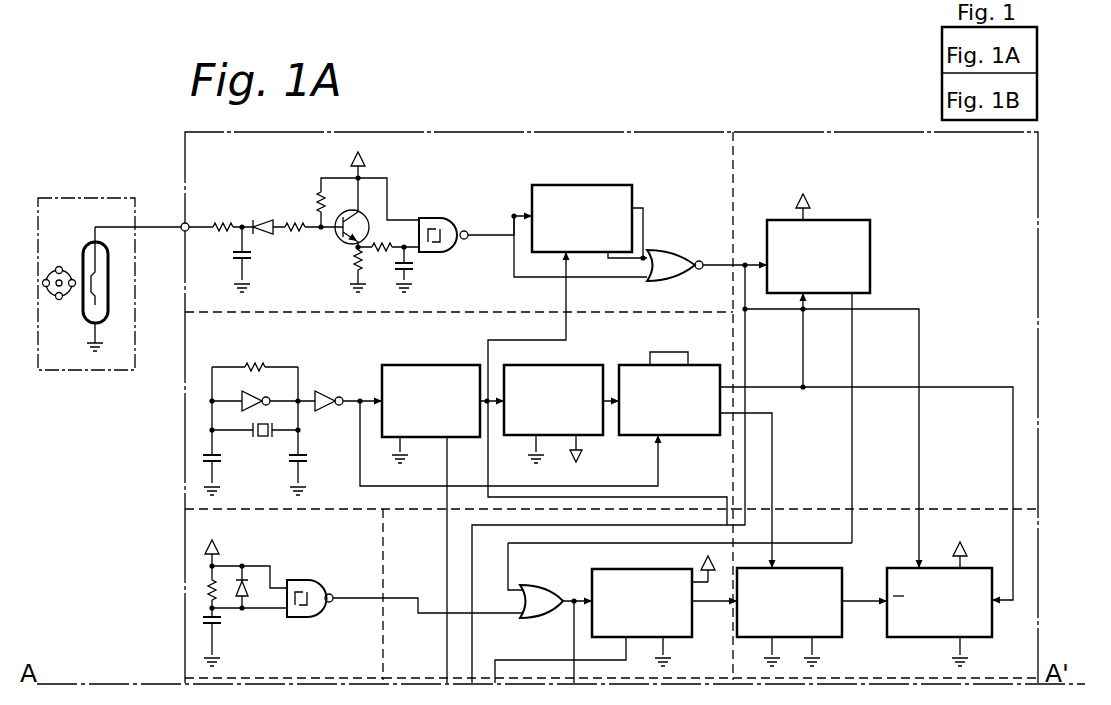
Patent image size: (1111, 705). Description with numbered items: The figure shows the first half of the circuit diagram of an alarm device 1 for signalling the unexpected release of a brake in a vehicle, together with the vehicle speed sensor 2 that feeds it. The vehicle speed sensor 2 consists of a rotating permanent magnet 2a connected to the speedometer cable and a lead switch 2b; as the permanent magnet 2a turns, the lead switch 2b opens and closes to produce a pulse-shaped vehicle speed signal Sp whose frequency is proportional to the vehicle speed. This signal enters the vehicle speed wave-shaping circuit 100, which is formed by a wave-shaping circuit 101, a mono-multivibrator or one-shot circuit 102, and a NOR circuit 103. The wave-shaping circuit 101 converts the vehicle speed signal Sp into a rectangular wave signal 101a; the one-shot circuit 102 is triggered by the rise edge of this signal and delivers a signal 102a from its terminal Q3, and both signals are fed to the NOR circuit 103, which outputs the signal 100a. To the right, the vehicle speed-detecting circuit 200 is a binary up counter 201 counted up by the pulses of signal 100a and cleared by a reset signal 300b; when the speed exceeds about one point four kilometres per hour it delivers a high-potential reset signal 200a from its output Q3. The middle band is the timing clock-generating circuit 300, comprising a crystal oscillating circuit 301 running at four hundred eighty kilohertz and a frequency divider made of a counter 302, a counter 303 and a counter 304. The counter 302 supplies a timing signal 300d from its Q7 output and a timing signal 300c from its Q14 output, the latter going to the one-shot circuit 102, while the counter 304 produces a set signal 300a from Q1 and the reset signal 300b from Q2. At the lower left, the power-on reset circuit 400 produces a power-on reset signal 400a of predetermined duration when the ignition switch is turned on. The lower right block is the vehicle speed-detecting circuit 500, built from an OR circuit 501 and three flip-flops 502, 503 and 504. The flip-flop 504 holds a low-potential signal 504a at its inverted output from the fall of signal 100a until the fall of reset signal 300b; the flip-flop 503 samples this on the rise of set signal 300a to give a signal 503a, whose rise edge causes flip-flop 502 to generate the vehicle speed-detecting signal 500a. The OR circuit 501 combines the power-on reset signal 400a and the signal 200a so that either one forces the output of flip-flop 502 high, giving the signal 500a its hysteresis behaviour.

The alarm device 1 is at (680, 129).
The vehicle speed sensor 2 is at (108, 373).
The rotating permanent magnet 2a is at (55, 296).
The lead switch 2b is at (108, 316).
The vehicle speed signal Sp is at (162, 231).
The vehicle speed wave-shaping circuit 100 is at (547, 132).
The signal 100a is at (704, 258).
The wave-shaping circuit 101 is at (397, 190).
The rectangular wave signal 101a is at (483, 233).
The mono-multivibrator (one-shot circuit) 102 is at (612, 184).
The signal 102a is at (580, 262).
The NOR circuit 103 is at (690, 279).
The vehicle speed-detecting circuit 200 is at (790, 131).
The reset signal 200a is at (856, 463).
The binary up counter 201 is at (870, 230).
The timing clock-generating circuit 300 is at (185, 458).
The set signal 300a is at (726, 420).
The reset signal 300b is at (733, 348).
The timing signal 300c is at (566, 338).
The timing signal 300d is at (445, 495).
The crystal oscillating circuit 301 is at (306, 366).
The counter 302 is at (420, 365).
The counter 303 is at (598, 437).
The counter 304 is at (640, 437).
The power-on reset circuit 400 is at (185, 589).
The power-on reset signal 400a is at (352, 602).
The vehicle speed-detecting circuit 500 is at (1033, 593).
The vehicle speed-detecting signal 500a is at (508, 661).
The OR circuit 501 is at (546, 586).
The flip-flop 502 is at (613, 557).
The flip-flop 503 is at (847, 574).
The signal 503a is at (712, 601).
The flip-flop 504 is at (901, 567).
The signal 504a is at (862, 604).